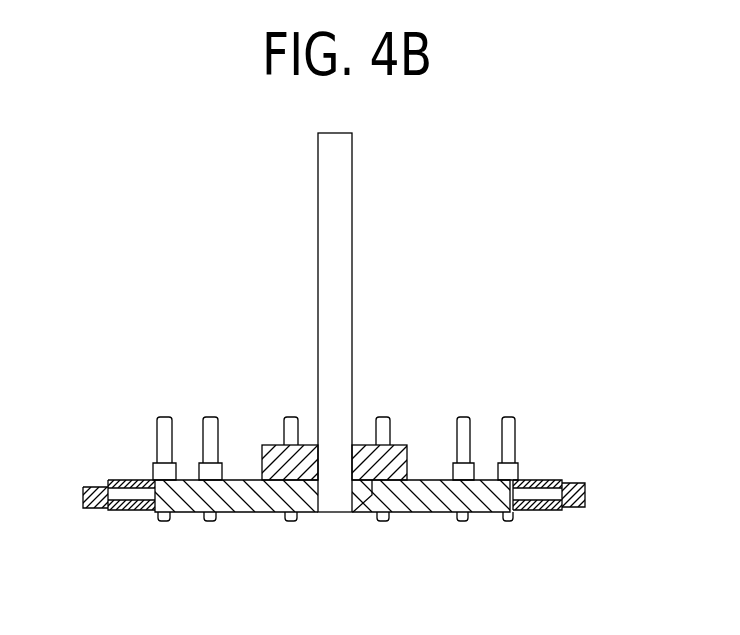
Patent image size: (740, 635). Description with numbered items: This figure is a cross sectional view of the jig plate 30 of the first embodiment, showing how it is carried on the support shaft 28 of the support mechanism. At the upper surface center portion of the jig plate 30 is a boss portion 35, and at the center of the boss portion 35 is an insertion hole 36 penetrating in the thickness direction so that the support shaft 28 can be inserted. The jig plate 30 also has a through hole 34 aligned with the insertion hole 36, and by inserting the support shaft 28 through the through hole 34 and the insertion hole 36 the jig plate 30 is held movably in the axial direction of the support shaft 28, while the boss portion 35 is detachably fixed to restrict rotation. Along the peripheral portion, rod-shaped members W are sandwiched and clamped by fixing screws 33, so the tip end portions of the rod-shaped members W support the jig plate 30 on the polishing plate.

The support shaft 28 is at (338, 245).
The jig plate 30 is at (483, 490).
The fixing screw 33 is at (583, 485).
The through hole 34 is at (347, 512).
The boss portion 35 is at (287, 445).
The insertion hole 36 is at (348, 456).
The rod-shaped member W is at (162, 430).